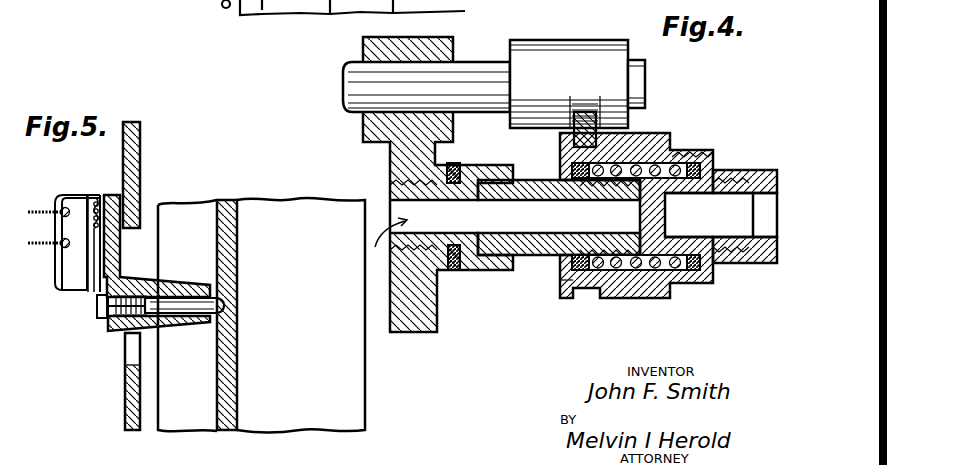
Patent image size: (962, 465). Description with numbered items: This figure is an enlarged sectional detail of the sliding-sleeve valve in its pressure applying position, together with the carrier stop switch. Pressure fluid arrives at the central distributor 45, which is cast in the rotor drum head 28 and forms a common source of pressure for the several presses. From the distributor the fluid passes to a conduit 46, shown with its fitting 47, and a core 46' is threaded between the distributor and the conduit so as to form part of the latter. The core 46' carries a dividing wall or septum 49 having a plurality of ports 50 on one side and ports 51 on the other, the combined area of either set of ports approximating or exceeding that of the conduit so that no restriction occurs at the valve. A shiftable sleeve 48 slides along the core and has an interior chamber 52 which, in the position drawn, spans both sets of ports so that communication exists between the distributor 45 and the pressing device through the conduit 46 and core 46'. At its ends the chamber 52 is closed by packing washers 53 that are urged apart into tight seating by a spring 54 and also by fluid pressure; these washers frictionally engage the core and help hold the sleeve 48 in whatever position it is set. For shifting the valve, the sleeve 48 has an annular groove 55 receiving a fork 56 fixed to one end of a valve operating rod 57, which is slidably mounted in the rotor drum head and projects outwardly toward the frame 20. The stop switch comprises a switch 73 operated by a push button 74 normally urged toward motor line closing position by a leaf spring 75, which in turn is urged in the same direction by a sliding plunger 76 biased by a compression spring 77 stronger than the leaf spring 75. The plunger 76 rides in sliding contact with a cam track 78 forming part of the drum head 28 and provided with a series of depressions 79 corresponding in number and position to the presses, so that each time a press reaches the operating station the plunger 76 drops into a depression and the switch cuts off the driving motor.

In FIG. 4, the central distributor 45 is at (392, 308).
In FIG. 4, the conduit 46 is at (745, 239).
In FIG. 4, the core 46' is at (498, 242).
In FIG. 4, the fitting 47 is at (660, 130).
In FIG. 4, the shiftable sleeve 48 is at (600, 299).
In FIG. 4, the dividing wall or septum 49 is at (670, 215).
In FIG. 4, the ports 50 is at (590, 198).
In FIG. 4, the ports 51 is at (716, 163).
In FIG. 4, the interior chamber 52 is at (680, 150).
In FIG. 4, the packing washers 53 is at (607, 210).
In FIG. 4, the spring 54 is at (627, 128).
In FIG. 4, the annular groove 55 is at (568, 280).
In FIG. 4, the fork 56 is at (573, 131).
In FIG. 4, the valve operating rod 57 is at (446, 73).
In FIG. 5, the frame 20 is at (132, 170).
In FIG. 5, the rotor drum head 28 is at (357, 418).
In FIG. 5, the switch 73 is at (81, 203).
In FIG. 5, the push button 74 is at (86, 275).
In FIG. 5, the leaf spring 75 is at (110, 258).
In FIG. 5, the sliding plunger 76 is at (196, 322).
In FIG. 5, the compression spring 77 is at (118, 332).
In FIG. 5, the cam track 78 is at (226, 376).
In FIG. 5, the depressions 79 is at (226, 296).